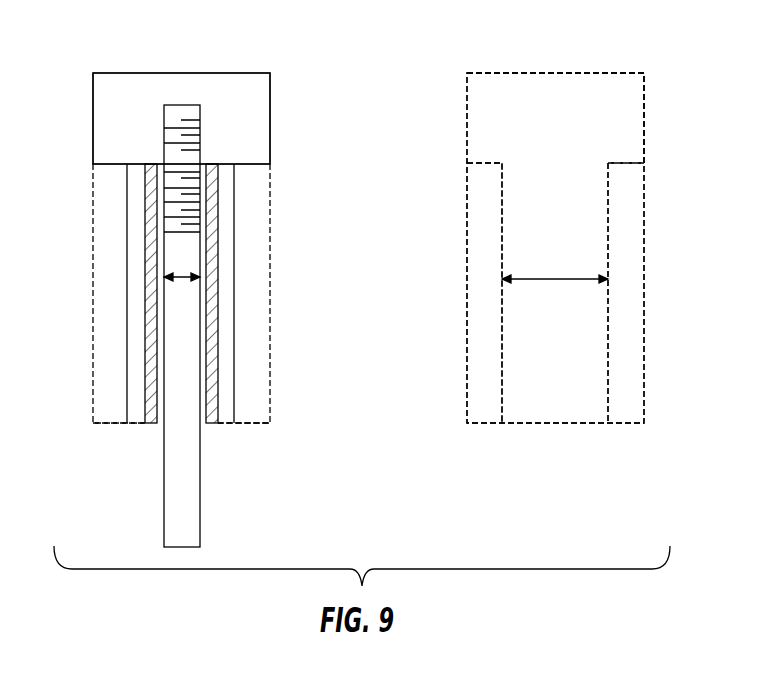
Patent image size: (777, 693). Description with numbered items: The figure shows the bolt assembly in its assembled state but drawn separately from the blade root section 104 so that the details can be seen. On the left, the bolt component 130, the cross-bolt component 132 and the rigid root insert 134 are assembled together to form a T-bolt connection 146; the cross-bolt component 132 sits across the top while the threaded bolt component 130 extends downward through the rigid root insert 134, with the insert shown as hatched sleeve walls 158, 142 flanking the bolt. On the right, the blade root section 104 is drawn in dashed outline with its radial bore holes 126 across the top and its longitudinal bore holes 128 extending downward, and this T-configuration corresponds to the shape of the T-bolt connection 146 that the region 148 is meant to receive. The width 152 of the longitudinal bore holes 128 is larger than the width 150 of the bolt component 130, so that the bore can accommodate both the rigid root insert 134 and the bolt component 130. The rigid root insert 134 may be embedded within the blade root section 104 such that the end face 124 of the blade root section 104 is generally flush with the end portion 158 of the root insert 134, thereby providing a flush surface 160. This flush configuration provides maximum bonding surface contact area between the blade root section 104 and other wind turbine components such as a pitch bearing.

The T-bolt connection 146 is at (92, 114).
The cross-bolt component 132 is at (270, 114).
The blade root section 104 is at (92, 258).
The rigid root insert 134 is at (127, 330).
The end portion of the root insert 158 is at (140, 424).
The second hatched sleeve wall 142 is at (207, 210).
The bolt component 130 is at (200, 383).
The width of the bolt component 150 is at (180, 277).
The end face of the blade root section 124 is at (118, 424).
The flush surface 160 is at (240, 424).
The second connector assembly 148 is at (584, 73).
The radial bore holes 126 is at (623, 113).
The longitudinal bore holes 128 is at (590, 327).
The width of the longitudinal bore holes 152 is at (555, 279).